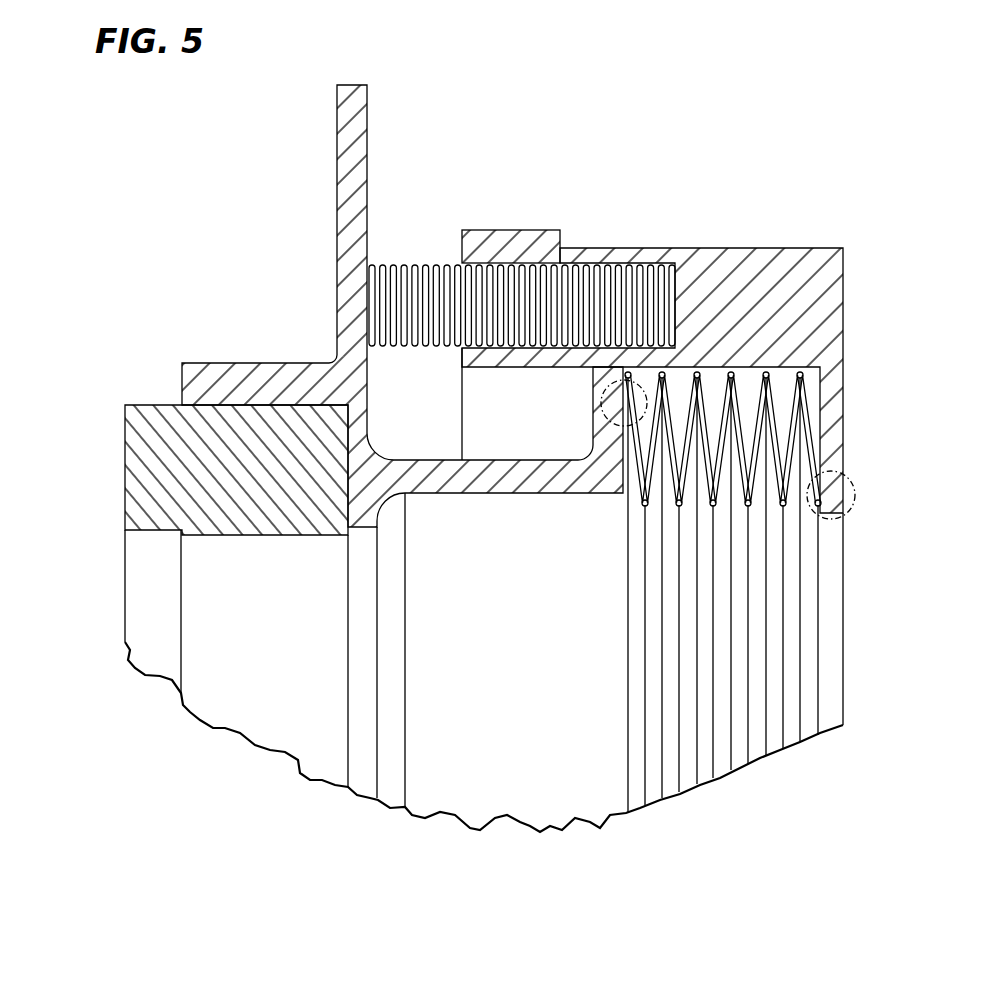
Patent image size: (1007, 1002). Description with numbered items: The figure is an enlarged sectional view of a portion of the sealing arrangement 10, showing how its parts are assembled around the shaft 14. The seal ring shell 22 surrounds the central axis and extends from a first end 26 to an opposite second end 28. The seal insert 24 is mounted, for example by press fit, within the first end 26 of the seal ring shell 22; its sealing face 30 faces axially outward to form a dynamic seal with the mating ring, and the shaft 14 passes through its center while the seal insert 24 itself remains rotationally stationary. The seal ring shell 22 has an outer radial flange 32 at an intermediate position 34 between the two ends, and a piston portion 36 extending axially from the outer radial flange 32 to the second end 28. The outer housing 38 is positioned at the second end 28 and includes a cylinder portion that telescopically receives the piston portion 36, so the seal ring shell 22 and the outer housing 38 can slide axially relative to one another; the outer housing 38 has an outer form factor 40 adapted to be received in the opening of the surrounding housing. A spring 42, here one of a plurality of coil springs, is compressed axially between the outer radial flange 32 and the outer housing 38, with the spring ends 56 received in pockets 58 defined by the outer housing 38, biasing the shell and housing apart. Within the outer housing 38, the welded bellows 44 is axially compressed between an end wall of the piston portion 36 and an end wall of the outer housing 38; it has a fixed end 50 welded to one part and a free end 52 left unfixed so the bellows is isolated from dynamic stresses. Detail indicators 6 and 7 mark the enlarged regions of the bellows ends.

The sealing arrangement 10 is at (697, 113).
The shaft 14 is at (248, 680).
The seal ring shell 22 is at (243, 362).
The seal insert 24 is at (122, 460).
The first end 26 is at (177, 400).
The second end 28 is at (617, 507).
The sealing face 30 is at (125, 503).
The outer radial flange 32 is at (367, 142).
The intermediate position 34 is at (320, 300).
The piston portion 36 is at (425, 443).
The outer housing 38 is at (735, 248).
The outer form factor 40 is at (848, 247).
The spring 42 is at (408, 262).
The welded bellows 44 is at (813, 387).
The fixed end 50 is at (818, 520).
The free end 52 is at (640, 374).
The ends of the coil springs 56 is at (565, 248).
The pockets 58 is at (627, 265).
The detail view 6 indicator 6 is at (605, 421).
The detail view 7 indicator 7 is at (855, 500).